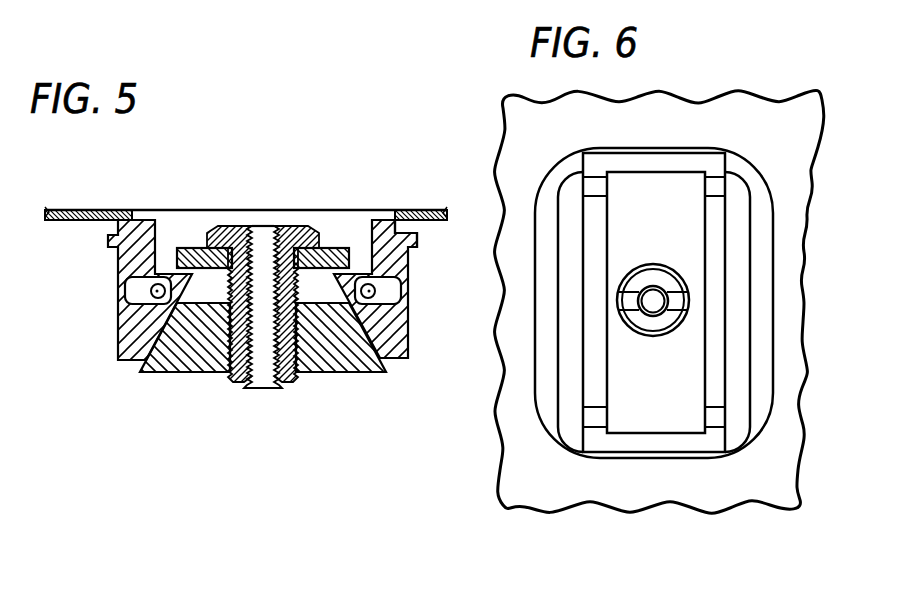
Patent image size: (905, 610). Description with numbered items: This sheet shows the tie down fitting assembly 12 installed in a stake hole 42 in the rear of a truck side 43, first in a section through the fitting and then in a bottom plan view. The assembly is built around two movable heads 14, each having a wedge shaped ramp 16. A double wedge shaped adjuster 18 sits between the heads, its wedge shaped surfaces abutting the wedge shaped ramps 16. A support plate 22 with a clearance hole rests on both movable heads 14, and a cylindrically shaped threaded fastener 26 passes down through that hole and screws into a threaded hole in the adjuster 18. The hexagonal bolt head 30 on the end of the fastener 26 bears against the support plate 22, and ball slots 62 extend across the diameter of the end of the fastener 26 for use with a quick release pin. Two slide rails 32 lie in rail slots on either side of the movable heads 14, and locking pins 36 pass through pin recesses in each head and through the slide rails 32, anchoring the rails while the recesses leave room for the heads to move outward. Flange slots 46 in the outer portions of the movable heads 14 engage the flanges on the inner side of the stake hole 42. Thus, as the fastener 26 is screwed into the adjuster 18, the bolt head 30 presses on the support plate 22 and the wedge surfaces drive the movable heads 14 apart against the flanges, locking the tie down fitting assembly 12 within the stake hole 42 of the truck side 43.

In FIG. 5, the tie down fitting assembly 12 is at (120, 483).
In FIG. 6, the tie down fitting assembly 12 is at (795, 558).
In FIG. 5, the movable heads 14 is at (117, 343).
In FIG. 6, the movable heads 14 is at (690, 152).
In FIG. 5, the wedge shaped ramps 16 is at (157, 362).
In FIG. 5, the double wedge shaped adjuster 18 is at (327, 373).
In FIG. 6, the double wedge shaped adjuster 18 is at (607, 440).
In FIG. 5, the support plate 22 is at (337, 243).
In FIG. 5, the threaded fastener 26 is at (249, 388).
In FIG. 6, the threaded fastener 26 is at (688, 286).
In FIG. 5, the hexagonal bolt head 30 is at (220, 226).
In FIG. 6, the slide rails 32 is at (726, 221).
In FIG. 5, the locking pins 36 is at (125, 293).
In FIG. 6, the stake hole 42 is at (775, 368).
In FIG. 5, the truck side 43 is at (423, 209).
In FIG. 5, the flange slots 46 is at (148, 210).
In FIG. 6, the ball slots 62 is at (606, 313).